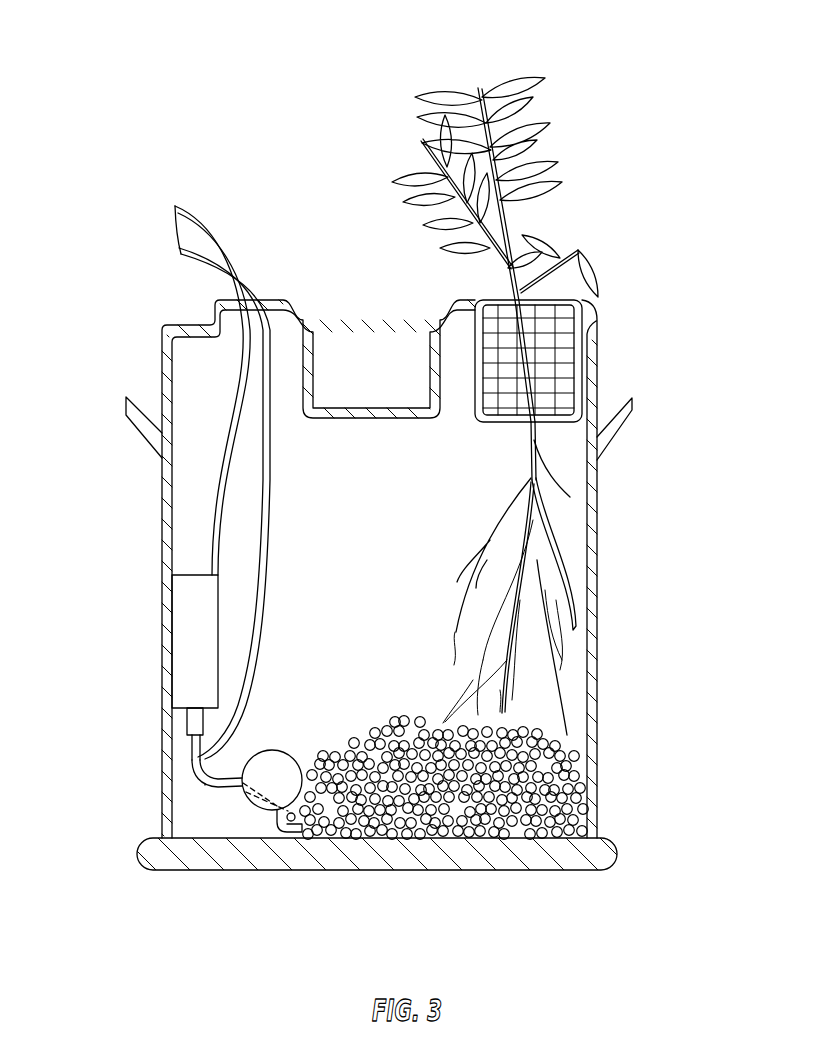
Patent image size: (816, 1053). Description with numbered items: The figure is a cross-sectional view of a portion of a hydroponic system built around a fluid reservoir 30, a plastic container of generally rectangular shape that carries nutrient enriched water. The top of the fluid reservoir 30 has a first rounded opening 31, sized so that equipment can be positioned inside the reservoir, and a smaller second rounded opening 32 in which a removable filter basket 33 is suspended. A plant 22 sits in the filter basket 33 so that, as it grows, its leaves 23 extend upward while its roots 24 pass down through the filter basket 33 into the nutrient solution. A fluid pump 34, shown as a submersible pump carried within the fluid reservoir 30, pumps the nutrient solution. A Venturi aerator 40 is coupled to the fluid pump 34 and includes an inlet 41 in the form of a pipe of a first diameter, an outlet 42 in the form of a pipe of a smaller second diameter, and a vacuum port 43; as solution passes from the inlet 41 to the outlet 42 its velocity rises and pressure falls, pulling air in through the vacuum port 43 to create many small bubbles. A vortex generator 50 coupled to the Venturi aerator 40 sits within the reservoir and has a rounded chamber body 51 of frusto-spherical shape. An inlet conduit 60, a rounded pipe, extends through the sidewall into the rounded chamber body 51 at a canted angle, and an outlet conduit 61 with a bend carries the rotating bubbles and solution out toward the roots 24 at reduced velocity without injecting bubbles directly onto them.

The plant 22 is at (466, 90).
The leaves 23 is at (532, 108).
The roots 24 is at (570, 497).
The fluid reservoir 30 is at (167, 537).
The first rounded opening 31 is at (232, 298).
The second rounded opening 32 is at (492, 303).
The filter basket 33 is at (562, 322).
The fluid pump 34 is at (192, 638).
The Venturi aerator 40 is at (207, 782).
The inlet 41 is at (193, 722).
The outlet 42 is at (197, 752).
The vacuum port 43 is at (207, 784).
The vortex generator 50 is at (268, 815).
The rounded chamber body 51 is at (333, 826).
The inlet conduit 60 is at (258, 812).
The outlet conduit 61 is at (292, 836).